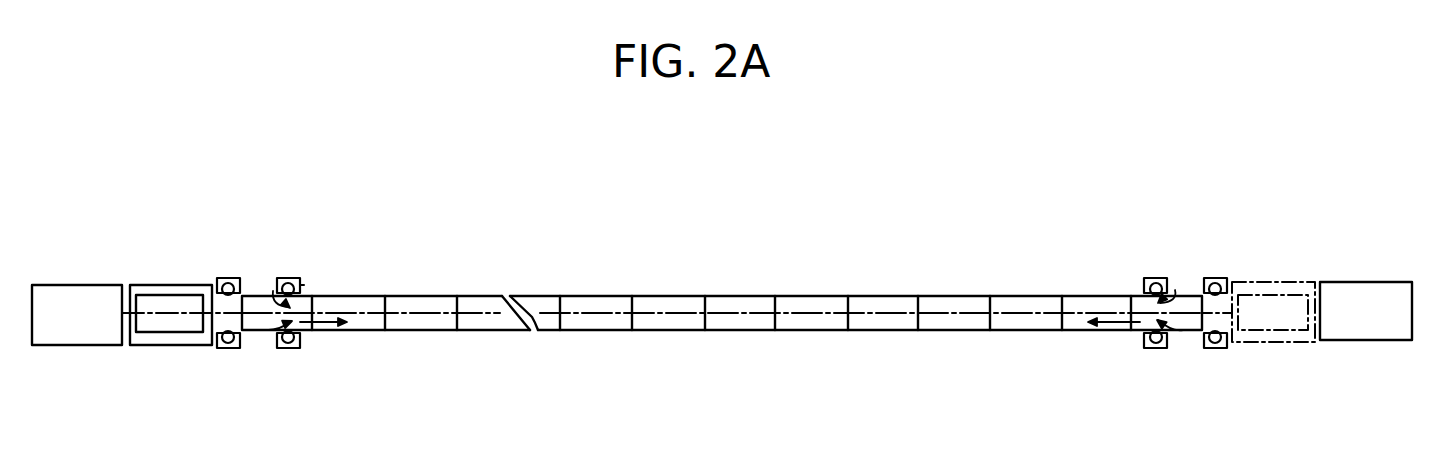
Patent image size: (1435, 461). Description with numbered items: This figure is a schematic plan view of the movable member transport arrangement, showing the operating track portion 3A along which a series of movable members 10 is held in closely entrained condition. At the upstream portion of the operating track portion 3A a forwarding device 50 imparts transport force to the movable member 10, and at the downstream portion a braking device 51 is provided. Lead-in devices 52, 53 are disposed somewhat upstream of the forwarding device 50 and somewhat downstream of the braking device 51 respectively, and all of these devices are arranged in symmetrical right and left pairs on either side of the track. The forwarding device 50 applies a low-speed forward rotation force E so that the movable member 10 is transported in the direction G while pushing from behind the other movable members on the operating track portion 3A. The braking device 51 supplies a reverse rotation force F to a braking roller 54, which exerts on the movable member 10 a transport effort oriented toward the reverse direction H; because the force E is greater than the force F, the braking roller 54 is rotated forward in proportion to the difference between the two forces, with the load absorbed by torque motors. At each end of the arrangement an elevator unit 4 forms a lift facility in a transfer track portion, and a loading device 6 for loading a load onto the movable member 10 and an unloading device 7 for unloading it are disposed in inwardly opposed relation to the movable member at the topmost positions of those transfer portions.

The unloading device 7 is at (68, 333).
The elevator unit 4 is at (165, 283).
The loading device 6 is at (1348, 288).
The operating track portion 3A is at (878, 313).
The movable member 10 is at (789, 291).
The lead-in device 53 is at (229, 276).
The braking device 51 is at (290, 278).
The braking roller 54 is at (300, 285).
The forwarding device 50 is at (1151, 271).
The lead-in device 52 is at (1215, 271).
The reverse rotation force F is at (265, 325).
The reverse direction H is at (320, 330).
The transport direction G is at (1112, 330).
The low-speed forward rotation force E is at (1170, 333).